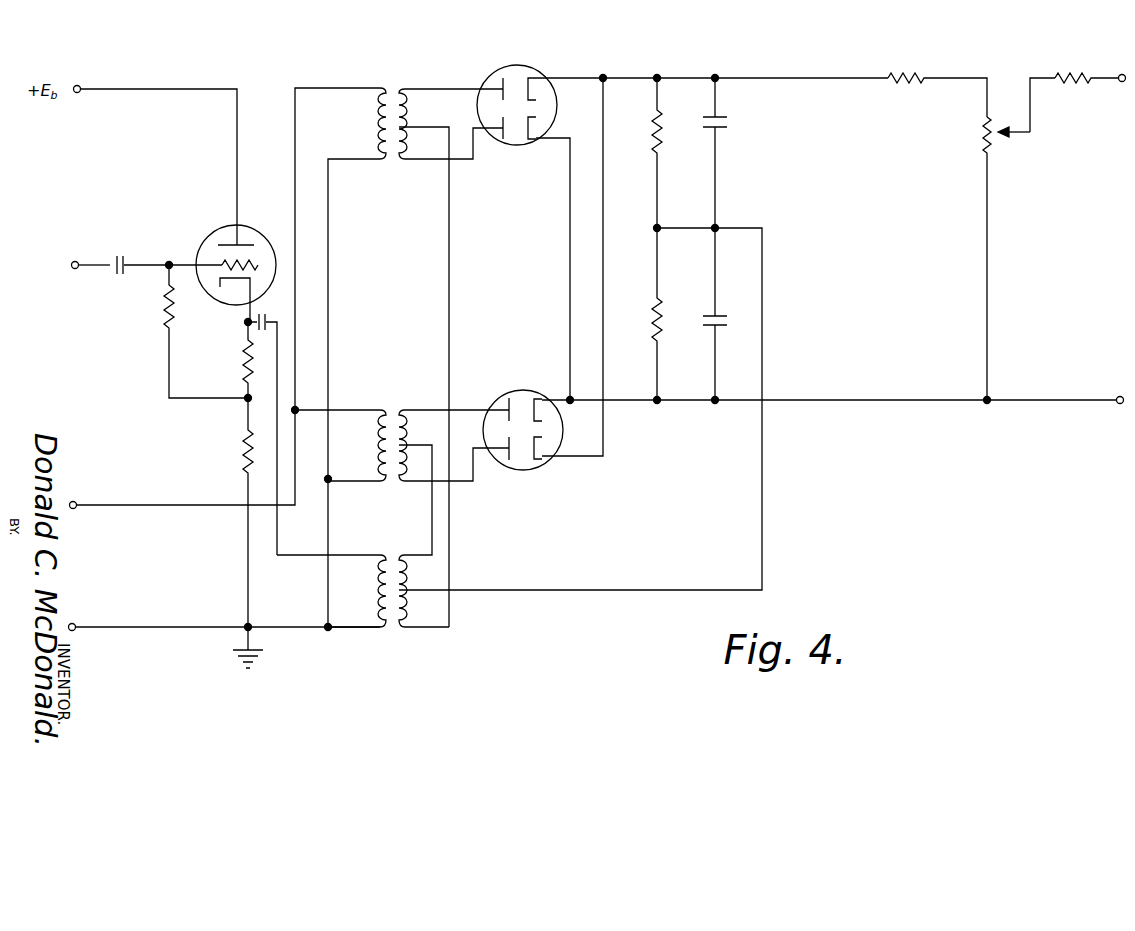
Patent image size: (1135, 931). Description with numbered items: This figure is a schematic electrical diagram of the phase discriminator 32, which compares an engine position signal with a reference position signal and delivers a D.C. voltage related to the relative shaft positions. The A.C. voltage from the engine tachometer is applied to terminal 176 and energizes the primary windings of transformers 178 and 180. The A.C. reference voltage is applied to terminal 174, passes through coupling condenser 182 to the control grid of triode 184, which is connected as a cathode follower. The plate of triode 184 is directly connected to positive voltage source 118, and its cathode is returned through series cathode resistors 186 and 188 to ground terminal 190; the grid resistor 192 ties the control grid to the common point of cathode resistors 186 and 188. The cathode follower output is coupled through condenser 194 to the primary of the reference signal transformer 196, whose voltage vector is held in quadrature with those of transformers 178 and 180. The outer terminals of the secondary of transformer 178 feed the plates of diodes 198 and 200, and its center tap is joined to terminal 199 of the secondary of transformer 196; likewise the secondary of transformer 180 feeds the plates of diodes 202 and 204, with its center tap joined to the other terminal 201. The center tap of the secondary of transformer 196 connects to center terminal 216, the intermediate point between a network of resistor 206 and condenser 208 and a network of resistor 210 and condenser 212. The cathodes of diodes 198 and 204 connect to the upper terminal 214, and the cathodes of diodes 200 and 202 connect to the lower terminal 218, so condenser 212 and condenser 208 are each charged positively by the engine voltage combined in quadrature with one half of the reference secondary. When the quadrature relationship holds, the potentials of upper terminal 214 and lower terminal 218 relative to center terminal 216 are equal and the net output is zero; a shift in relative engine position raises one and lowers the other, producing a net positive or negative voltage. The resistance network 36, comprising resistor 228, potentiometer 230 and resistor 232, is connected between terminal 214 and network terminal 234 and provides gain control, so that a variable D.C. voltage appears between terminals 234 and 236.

The positive voltage source 118 is at (80, 87).
The terminal 174 is at (74, 262).
The coupling condenser 182 is at (124, 257).
The triode 184 is at (258, 258).
The grid resistor 192 is at (164, 308).
The condenser 194 is at (246, 322).
The cathode resistor 186 is at (243, 352).
The cathode resistor 188 is at (243, 447).
The terminal 176 is at (76, 505).
The ground terminal 190 is at (74, 626).
The transformer 178 is at (399, 153).
The transformer 180 is at (395, 412).
The reference signal transformer 196 is at (393, 620).
The terminal of secondary of transformer 196 199 is at (428, 628).
The terminal of secondary of transformer 196 201 is at (430, 553).
The diode 198 is at (517, 100).
The diode 200 is at (518, 112).
The diode 202 is at (525, 398).
The diode 204 is at (532, 460).
The resistor 210 is at (652, 120).
The condenser 212 is at (728, 120).
The upper terminal 214 is at (715, 76).
The center terminal 216 is at (718, 228).
The resistor 206 is at (652, 305).
The condenser 208 is at (706, 320).
The lower terminal 218 is at (716, 403).
The resistor 228 is at (925, 76).
The potentiometer 230 is at (1000, 142).
The resistor 232 is at (1070, 76).
The network terminal 234 is at (1121, 82).
The terminal 236 is at (1119, 397).
The resistance network 36 is at (1017, 241).
The phase discriminator 32 is at (644, 635).